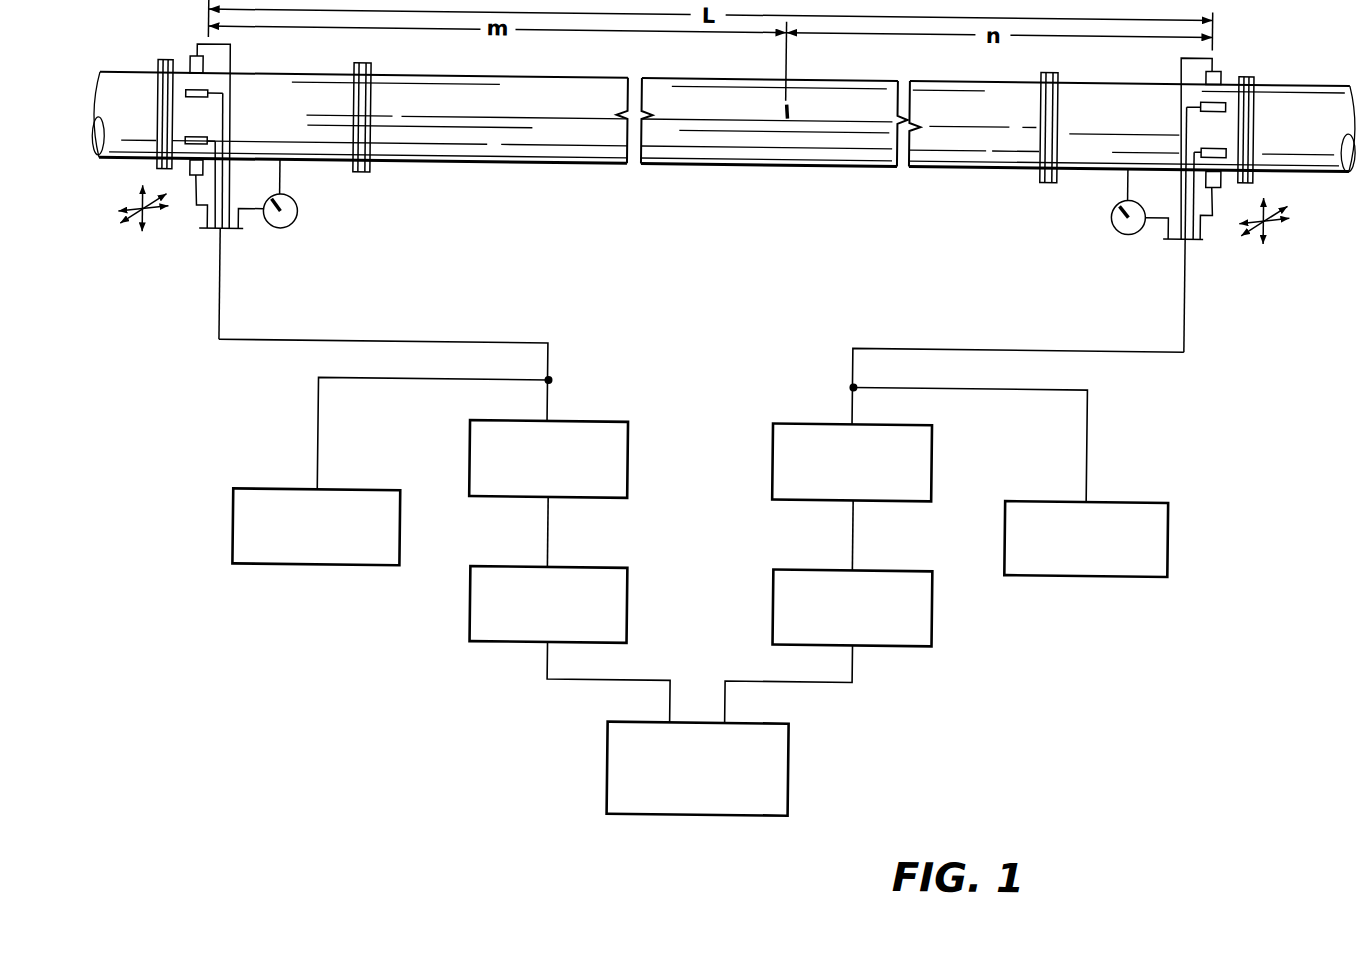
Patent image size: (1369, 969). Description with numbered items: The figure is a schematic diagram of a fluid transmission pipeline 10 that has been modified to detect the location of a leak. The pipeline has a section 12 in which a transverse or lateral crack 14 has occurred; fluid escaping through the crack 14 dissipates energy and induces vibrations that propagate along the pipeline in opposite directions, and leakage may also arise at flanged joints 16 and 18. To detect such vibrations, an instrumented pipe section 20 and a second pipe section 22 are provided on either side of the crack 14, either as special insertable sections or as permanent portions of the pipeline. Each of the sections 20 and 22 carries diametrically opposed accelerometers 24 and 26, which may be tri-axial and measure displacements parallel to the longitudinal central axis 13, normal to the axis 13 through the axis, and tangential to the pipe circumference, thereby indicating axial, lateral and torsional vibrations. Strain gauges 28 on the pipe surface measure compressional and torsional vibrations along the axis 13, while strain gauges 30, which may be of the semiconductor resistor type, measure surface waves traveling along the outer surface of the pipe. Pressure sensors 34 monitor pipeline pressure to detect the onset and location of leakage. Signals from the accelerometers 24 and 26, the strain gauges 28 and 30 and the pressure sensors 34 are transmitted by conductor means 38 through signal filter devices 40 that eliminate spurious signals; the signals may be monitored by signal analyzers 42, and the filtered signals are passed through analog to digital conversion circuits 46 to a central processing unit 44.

The fluid transmission pipeline 10 is at (724, 104).
The pipeline section 12 is at (698, 72).
The longitudinal central axis 13 is at (558, 118).
The transverse crack 14 is at (786, 104).
The flanged joint 16 is at (366, 170).
The flanged joint 18 is at (1036, 150).
The pipe section 20 is at (288, 72).
The second pipe section 22 is at (1084, 72).
The accelerometer 24 is at (190, 56).
The accelerometer 26 is at (191, 176).
The strain gauge 28 is at (186, 94).
The strain gauge 30 is at (186, 140).
The pressure sensor 34 is at (297, 220).
The conductor means 38 is at (464, 338).
The signal filter device 40 is at (575, 417).
The signal analyzer 42 is at (296, 563).
The central processing unit 44 is at (613, 764).
The analog to digital conversion circuit 46 is at (519, 638).